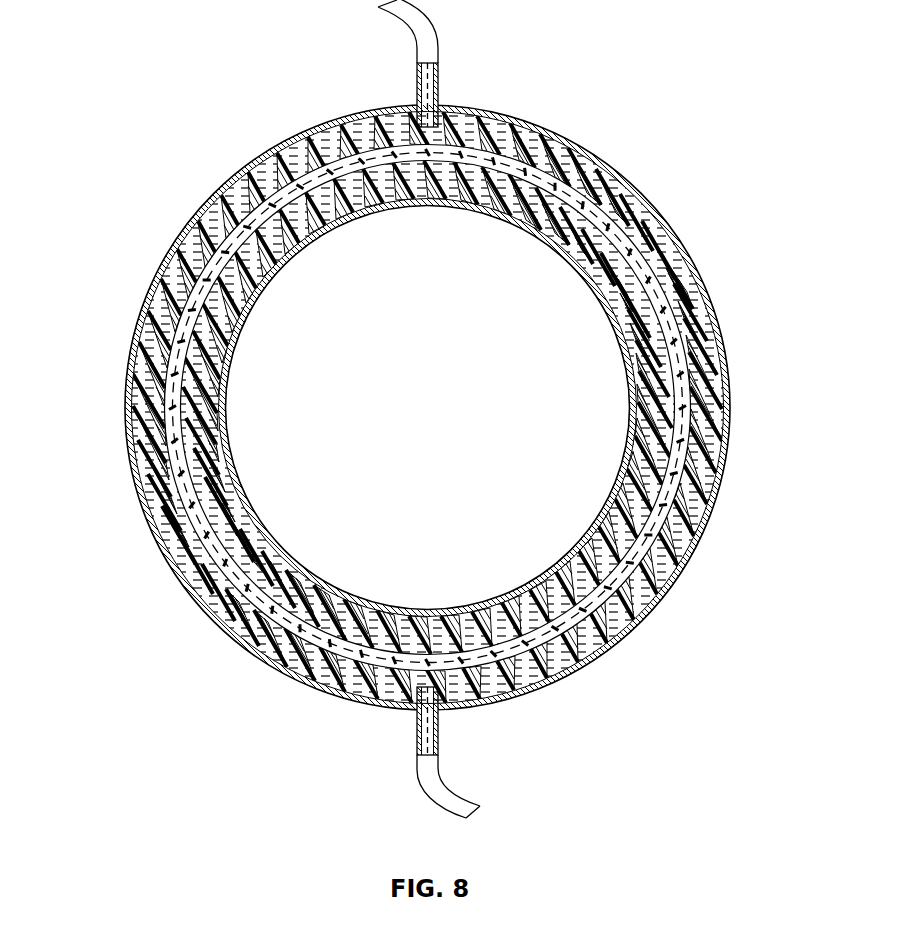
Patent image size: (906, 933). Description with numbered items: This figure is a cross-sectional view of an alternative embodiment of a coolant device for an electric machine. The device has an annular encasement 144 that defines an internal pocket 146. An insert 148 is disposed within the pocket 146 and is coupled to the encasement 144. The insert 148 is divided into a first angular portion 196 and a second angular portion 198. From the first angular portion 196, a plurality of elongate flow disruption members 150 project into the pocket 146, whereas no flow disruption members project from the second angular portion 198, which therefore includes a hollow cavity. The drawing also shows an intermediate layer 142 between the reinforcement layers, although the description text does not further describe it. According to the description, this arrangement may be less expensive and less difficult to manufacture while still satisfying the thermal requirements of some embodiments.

The second angular portion 198 is at (130, 408).
The annular encasement 144 is at (249, 161).
The insert 148 is at (172, 253).
The intermediate layer 142 is at (192, 508).
The elongate flow disruption members 150 is at (640, 613).
The first angular portion 196 is at (253, 648).
The internal pocket 146 is at (798, 511).